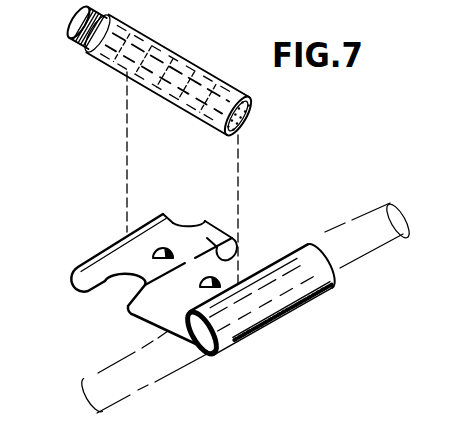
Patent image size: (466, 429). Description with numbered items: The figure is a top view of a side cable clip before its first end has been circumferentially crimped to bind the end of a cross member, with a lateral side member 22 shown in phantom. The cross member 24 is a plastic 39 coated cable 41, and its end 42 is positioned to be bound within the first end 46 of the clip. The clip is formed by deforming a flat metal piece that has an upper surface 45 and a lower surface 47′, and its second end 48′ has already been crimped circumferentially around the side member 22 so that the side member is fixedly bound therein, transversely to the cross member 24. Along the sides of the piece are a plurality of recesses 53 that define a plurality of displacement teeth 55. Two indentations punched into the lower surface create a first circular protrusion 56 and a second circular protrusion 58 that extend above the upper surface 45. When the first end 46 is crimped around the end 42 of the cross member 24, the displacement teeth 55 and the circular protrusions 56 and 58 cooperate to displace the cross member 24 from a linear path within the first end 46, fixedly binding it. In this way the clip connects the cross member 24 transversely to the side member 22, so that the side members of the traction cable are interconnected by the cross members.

The side member 22 is at (372, 237).
The cross member 24 is at (163, 55).
The plastic 39 is at (253, 102).
The cable 41 is at (68, 36).
The end of cross member 42 is at (203, 70).
The upper surface 45 is at (88, 262).
The first end 46 is at (125, 233).
The lower surface 47′ is at (253, 332).
The second end 48′ is at (298, 291).
The recess 53 is at (121, 292).
The displacement tooth 55 is at (212, 222).
The first circular protrusion 56 is at (163, 248).
The second circular protrusion 58 is at (243, 242).